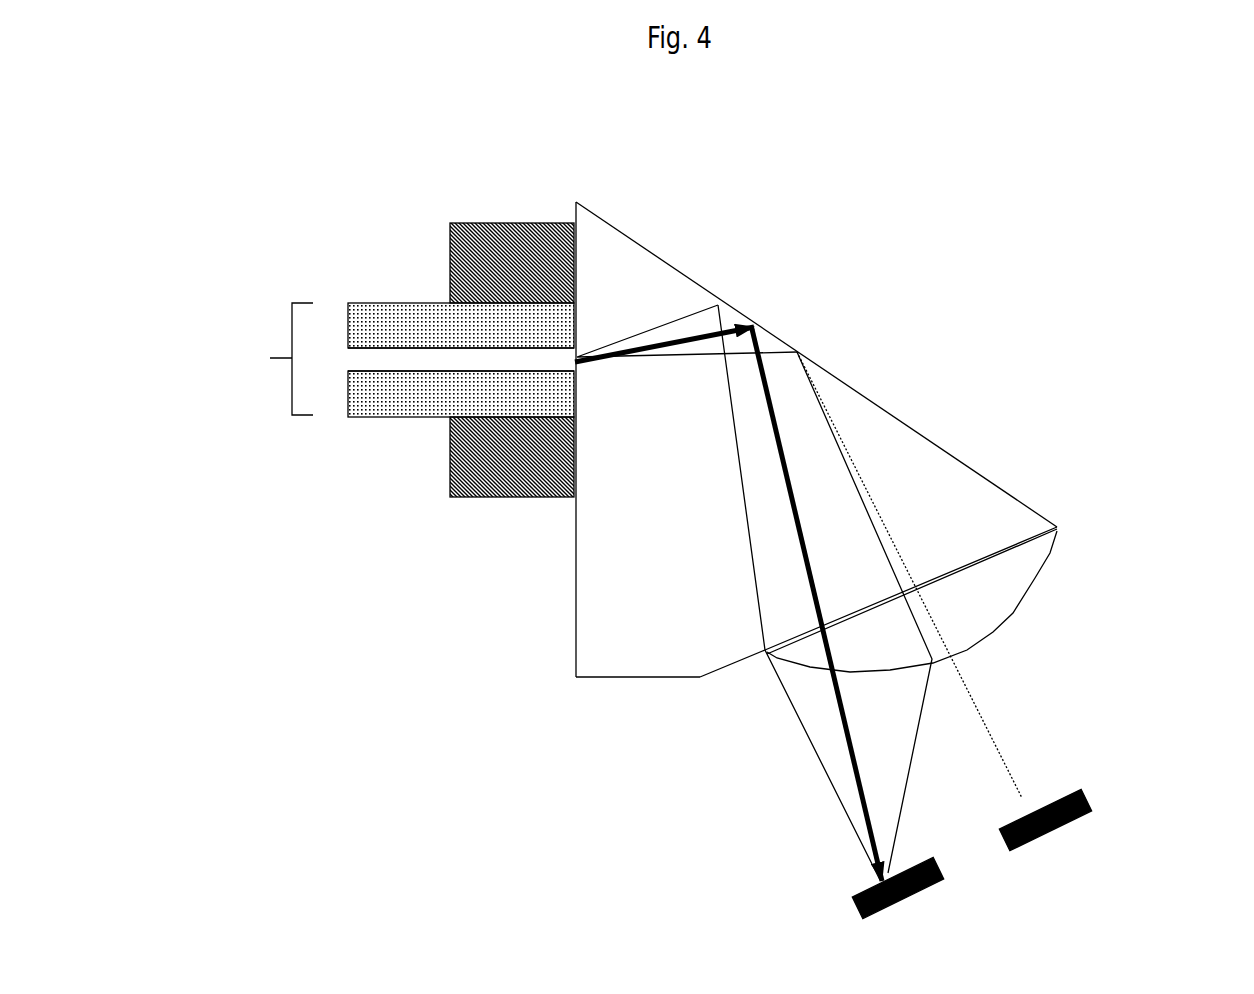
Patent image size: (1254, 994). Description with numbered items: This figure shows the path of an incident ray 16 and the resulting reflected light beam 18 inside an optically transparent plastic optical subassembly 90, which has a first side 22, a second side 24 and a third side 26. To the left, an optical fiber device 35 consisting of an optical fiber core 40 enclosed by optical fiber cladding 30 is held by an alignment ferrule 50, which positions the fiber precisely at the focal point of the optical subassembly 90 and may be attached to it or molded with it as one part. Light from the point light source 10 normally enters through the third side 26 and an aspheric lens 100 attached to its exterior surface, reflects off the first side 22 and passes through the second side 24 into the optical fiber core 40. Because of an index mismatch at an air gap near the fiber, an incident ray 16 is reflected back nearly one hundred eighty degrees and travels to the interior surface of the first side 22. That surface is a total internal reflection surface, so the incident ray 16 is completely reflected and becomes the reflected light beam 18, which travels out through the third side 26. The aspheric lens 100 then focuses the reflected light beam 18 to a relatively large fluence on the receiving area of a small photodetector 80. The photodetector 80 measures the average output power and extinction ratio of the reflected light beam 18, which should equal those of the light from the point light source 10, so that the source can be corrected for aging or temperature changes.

The point light source 10 is at (1000, 602).
The incident ray 16 is at (710, 327).
The reflected light beam 18 is at (808, 500).
The first side 22 is at (910, 408).
The second side 24 is at (576, 323).
The third side 26 is at (712, 707).
The optical fiber cladding 30 is at (397, 302).
The optical fiber device 35 is at (230, 359).
The optical fiber core 40 is at (348, 358).
The alignment ferrule 50 is at (448, 487).
The photodetector 80 is at (817, 878).
The optical subassembly 90 is at (767, 451).
The aspheric lens 100 is at (975, 638).